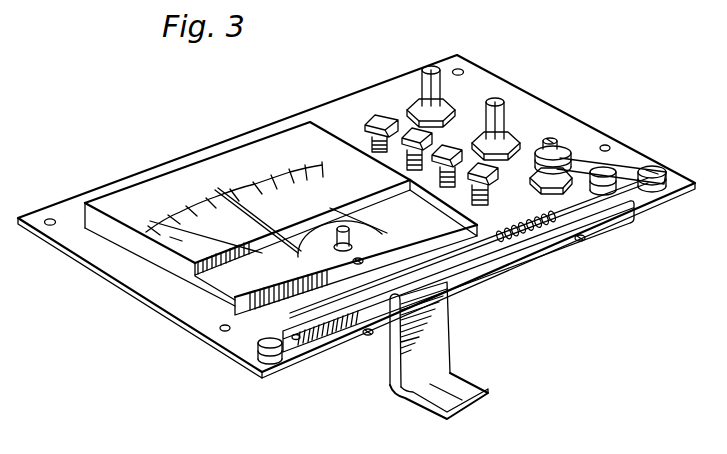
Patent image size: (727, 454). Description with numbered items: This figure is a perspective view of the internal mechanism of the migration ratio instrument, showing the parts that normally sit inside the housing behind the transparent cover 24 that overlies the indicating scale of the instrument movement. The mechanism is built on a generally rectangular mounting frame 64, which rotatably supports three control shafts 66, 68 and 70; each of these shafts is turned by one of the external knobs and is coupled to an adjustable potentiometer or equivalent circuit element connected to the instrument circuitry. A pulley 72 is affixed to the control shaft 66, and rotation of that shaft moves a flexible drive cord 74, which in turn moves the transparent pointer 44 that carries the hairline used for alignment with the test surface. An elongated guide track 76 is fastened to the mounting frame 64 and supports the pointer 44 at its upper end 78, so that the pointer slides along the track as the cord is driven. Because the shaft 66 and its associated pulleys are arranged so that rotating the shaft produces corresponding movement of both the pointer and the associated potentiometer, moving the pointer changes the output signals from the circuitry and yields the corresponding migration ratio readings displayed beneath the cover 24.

The transparent cover 24 is at (117, 200).
The transparent pointer 44 is at (477, 385).
The mounting frame 64 is at (72, 238).
The control shaft 66 is at (560, 142).
The control shaft 68 is at (503, 112).
The control shaft 70 is at (425, 78).
The pulley 72 is at (594, 136).
The flexible drive cord 74 is at (628, 164).
The guide track 76 is at (302, 348).
The upper end of pointer 78 is at (446, 286).